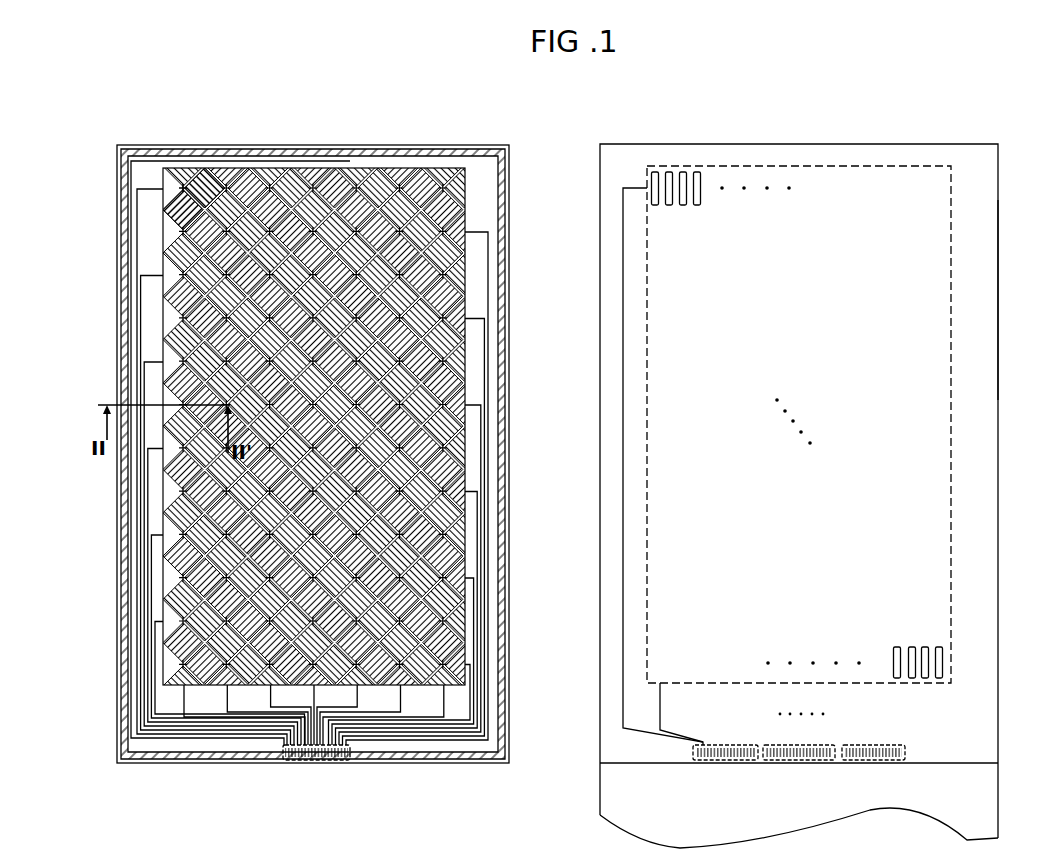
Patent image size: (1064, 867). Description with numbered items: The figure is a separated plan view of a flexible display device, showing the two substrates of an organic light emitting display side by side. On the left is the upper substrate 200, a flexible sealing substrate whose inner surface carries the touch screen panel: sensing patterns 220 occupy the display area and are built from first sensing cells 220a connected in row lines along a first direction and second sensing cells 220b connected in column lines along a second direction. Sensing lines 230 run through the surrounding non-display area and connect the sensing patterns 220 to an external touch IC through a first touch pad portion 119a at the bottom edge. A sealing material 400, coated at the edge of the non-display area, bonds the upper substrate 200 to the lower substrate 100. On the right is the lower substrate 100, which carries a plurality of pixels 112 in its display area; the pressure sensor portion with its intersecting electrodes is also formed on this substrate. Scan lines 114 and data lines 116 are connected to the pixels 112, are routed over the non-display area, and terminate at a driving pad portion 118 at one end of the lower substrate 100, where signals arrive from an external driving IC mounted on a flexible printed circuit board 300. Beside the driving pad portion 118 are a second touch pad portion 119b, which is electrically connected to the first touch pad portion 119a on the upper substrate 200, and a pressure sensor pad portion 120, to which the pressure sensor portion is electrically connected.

The lower substrate 100 is at (792, 145).
The pixels 112 is at (688, 170).
The scan lines 114 is at (622, 712).
The data lines 116 is at (660, 762).
The driving pad portion 118 is at (690, 762).
The first touch pad portion 119a is at (348, 758).
The second touch pad portion 119b is at (757, 762).
The pressure sensor pad portion 120 is at (912, 762).
The upper substrate 200 is at (392, 145).
The sensing patterns 220 is at (248, 106).
The first sensing cells 220a is at (206, 184).
The second sensing cells 220b is at (180, 188).
The sensing lines 230 is at (136, 241).
The flexible printed circuit board 300 is at (600, 800).
The sealing material 400 is at (511, 449).